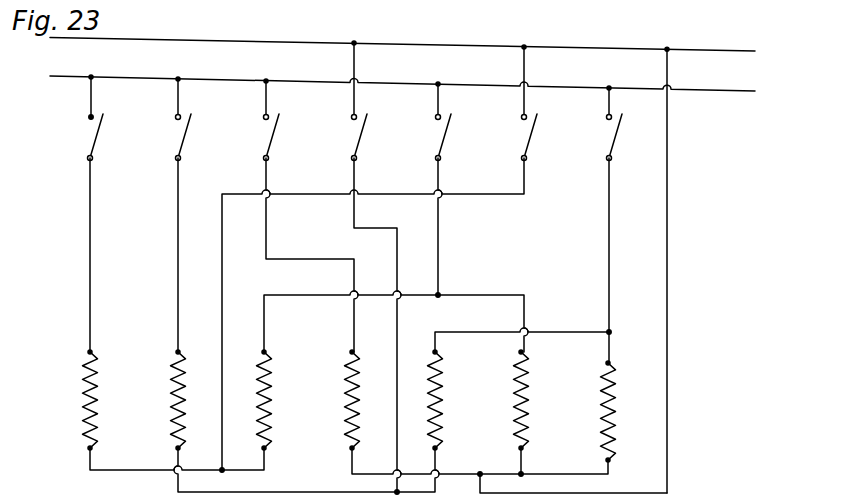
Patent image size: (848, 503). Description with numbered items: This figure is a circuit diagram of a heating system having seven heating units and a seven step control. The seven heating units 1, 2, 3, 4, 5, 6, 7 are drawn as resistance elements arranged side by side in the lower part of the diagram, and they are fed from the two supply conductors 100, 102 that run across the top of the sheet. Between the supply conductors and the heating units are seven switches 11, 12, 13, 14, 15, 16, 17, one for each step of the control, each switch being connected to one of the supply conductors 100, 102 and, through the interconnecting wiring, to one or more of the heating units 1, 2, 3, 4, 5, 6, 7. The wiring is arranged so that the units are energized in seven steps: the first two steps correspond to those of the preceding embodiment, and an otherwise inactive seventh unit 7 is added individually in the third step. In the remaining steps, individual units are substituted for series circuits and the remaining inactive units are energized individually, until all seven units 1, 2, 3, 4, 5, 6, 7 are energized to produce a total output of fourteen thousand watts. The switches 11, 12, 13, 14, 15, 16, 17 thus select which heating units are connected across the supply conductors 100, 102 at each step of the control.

The heating element resistor 1 is at (82, 390).
The heating element resistor 2 is at (170, 394).
The heating element resistor 3 is at (258, 395).
The heating element resistor 4 is at (345, 397).
The heating element resistor 5 is at (429, 399).
The heating element resistor 6 is at (514, 398).
The heating element resistor 7 is at (601, 388).
The switch 11 is at (97, 136).
The switch 12 is at (184, 136).
The switch 13 is at (272, 136).
The switch 14 is at (360, 136).
The switch 15 is at (444, 136).
The switch 16 is at (530, 136).
The switch 17 is at (615, 136).
The supply conductor 100 is at (241, 39).
The supply conductor 102 is at (285, 80).